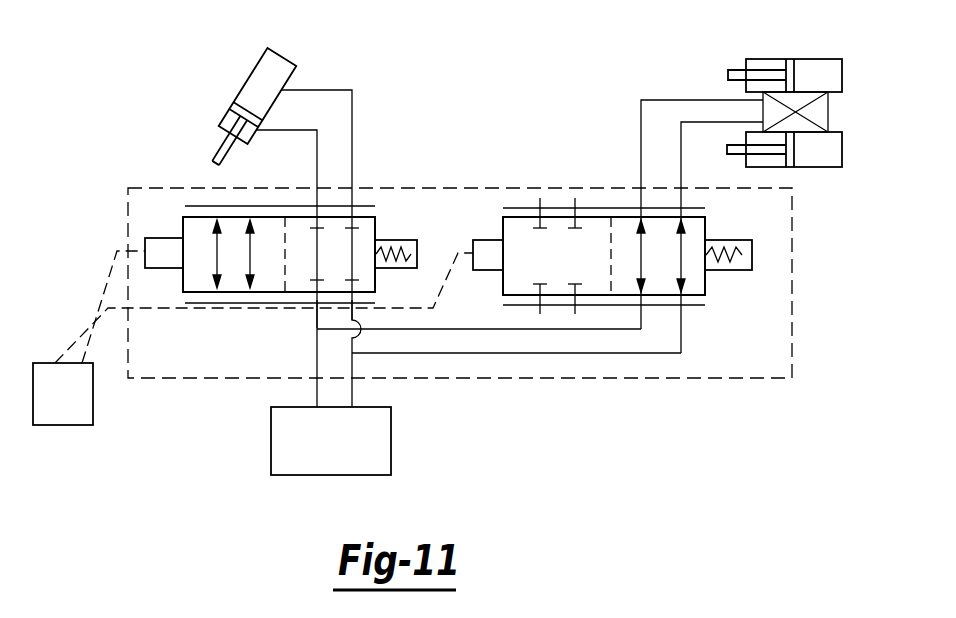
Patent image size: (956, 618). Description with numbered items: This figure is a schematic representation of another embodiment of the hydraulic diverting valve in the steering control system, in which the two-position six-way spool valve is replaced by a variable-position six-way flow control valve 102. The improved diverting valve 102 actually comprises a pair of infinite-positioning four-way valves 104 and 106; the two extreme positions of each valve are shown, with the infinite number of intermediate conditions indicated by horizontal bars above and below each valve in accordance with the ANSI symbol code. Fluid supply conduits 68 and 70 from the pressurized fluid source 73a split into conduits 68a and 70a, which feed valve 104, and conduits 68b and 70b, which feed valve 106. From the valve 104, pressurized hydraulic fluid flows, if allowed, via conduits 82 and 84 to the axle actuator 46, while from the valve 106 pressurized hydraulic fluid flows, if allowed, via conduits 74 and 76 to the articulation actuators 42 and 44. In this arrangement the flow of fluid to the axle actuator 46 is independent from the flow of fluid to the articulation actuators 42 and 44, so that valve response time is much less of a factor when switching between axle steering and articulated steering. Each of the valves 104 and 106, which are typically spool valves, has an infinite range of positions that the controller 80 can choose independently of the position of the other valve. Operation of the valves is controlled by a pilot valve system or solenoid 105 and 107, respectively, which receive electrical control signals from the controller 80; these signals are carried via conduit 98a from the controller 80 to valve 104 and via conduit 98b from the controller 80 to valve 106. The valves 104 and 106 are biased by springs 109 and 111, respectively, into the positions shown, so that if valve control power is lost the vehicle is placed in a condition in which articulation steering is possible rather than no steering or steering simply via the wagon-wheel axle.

The articulation actuator 42 is at (820, 59).
The articulation actuator 44 is at (825, 167).
The axle actuator 46 is at (245, 80).
The fluid supply conduit 68 is at (317, 398).
The conduit 68a is at (317, 317).
The conduit 68b is at (495, 328).
The fluid supply conduit 70 is at (352, 395).
The conduit 70a is at (353, 317).
The conduit 70b is at (682, 330).
The pressurized fluid source 73a is at (391, 446).
The conduit 74 is at (681, 152).
The conduit 76 is at (640, 150).
The controller 80 is at (60, 425).
The conduit 82 is at (316, 170).
The conduit 84 is at (352, 125).
The conduit 98a is at (104, 273).
The conduit 98b is at (92, 343).
The variable-position six-way flow control valve 102 is at (167, 375).
The infinite-positioning four-way valve 104 is at (390, 215).
The solenoid 105 is at (170, 237).
The infinite-positioning four-way valve 106 is at (714, 220).
The solenoid 107 is at (486, 240).
The spring 109 is at (386, 268).
The spring 111 is at (730, 270).